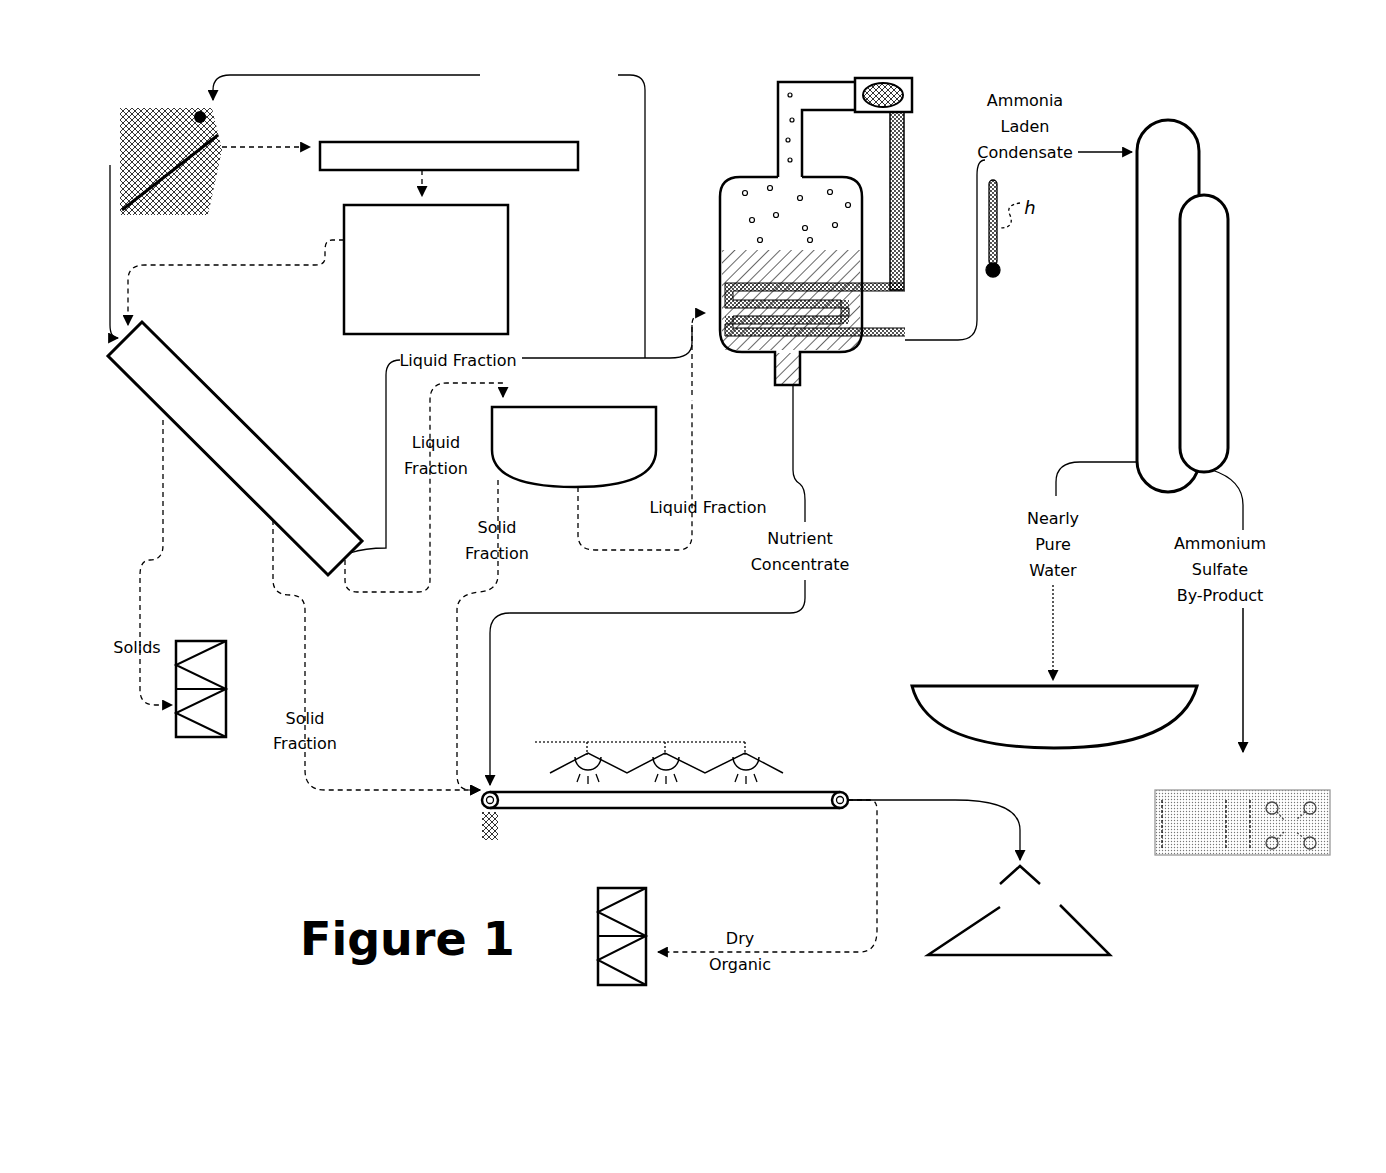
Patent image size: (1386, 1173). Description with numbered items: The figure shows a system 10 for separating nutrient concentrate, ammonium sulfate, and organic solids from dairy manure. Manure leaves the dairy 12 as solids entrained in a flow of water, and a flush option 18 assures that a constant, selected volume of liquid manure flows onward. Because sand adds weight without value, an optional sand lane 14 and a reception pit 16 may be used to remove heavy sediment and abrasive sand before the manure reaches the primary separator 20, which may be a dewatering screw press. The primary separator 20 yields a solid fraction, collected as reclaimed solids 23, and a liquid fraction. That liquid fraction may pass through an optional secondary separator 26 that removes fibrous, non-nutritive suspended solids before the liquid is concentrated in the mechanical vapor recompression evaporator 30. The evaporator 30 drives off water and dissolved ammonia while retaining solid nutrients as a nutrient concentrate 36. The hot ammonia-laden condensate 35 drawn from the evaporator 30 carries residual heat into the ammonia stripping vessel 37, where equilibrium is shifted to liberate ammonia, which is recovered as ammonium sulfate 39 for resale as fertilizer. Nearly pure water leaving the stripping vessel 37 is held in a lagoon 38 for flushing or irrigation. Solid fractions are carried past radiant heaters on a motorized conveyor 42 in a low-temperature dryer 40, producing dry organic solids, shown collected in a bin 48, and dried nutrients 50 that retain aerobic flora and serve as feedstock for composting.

The system 10 is at (330, 392).
The dairy 12 is at (233, 190).
The optional sand lane 14 is at (560, 142).
The reception pit 16 is at (512, 260).
The flush option 18 is at (429, 212).
The primary separator 20 is at (158, 330).
The reclaimed solids 23 is at (198, 641).
The optional secondary separator 26 is at (592, 407).
The mechanical vapor recompression evaporator 30 is at (735, 175).
The ammonia-laden condensate 35 is at (900, 348).
The nutrient concentrate 36 is at (785, 388).
The ammonia stripping vessel 37 is at (1192, 132).
The holding lagoon 38 is at (935, 690).
The ammonium sulfate 39 is at (1300, 772).
The dryer 40 is at (635, 742).
The motorized conveyor 42 is at (810, 790).
The dry organic storage 48 is at (618, 888).
The dried nutrients 50 is at (1058, 900).